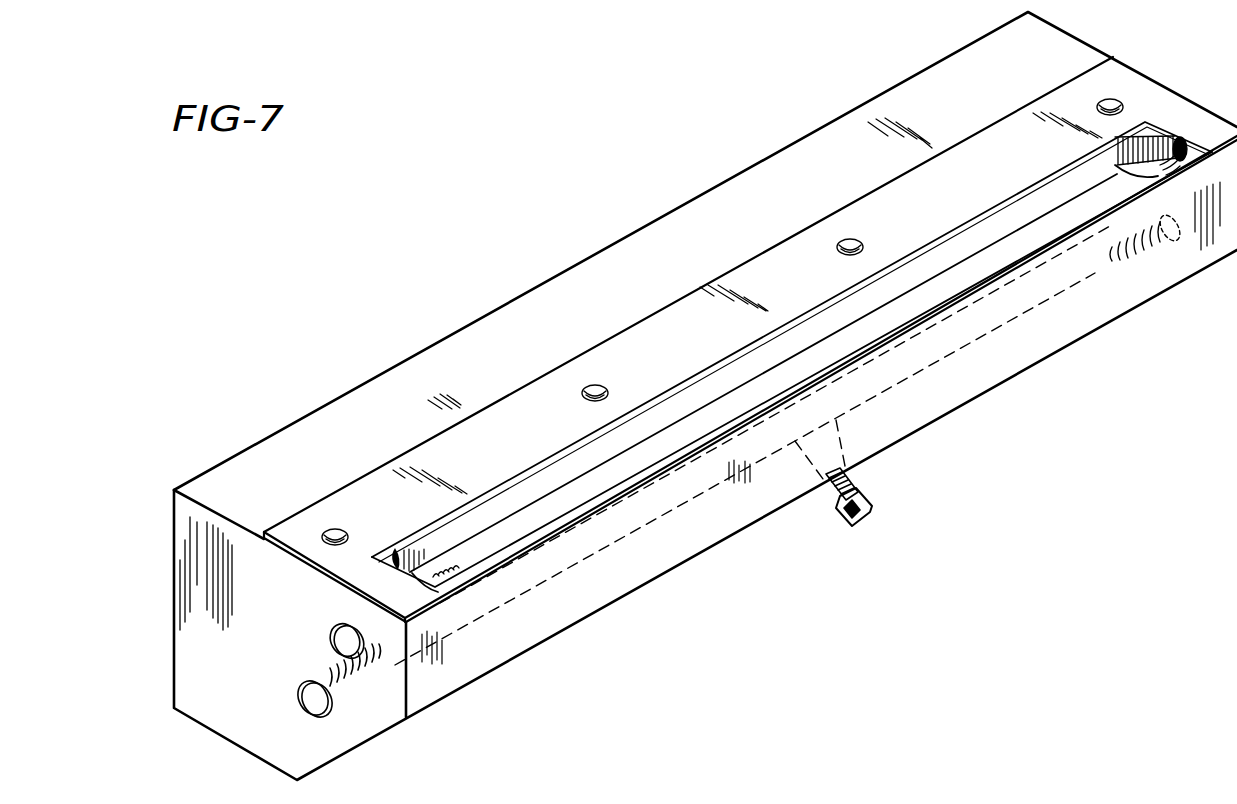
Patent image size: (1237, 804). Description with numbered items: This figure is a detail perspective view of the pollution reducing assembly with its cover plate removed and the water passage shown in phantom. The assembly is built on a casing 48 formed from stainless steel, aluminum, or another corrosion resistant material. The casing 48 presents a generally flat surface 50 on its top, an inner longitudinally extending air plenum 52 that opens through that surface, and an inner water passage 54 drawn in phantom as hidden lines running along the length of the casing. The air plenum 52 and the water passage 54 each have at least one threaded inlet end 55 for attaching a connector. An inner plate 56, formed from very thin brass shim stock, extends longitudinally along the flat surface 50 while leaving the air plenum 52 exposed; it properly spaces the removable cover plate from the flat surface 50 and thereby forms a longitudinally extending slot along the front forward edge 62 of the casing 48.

The casing 48 is at (174, 578).
The flat surface 50 is at (348, 410).
The air plenum 52 is at (726, 408).
The water passage 54 is at (690, 510).
The threaded inlet end 55 is at (1118, 156).
The inner plate 56 is at (307, 571).
The front forward edge 62 is at (478, 596).